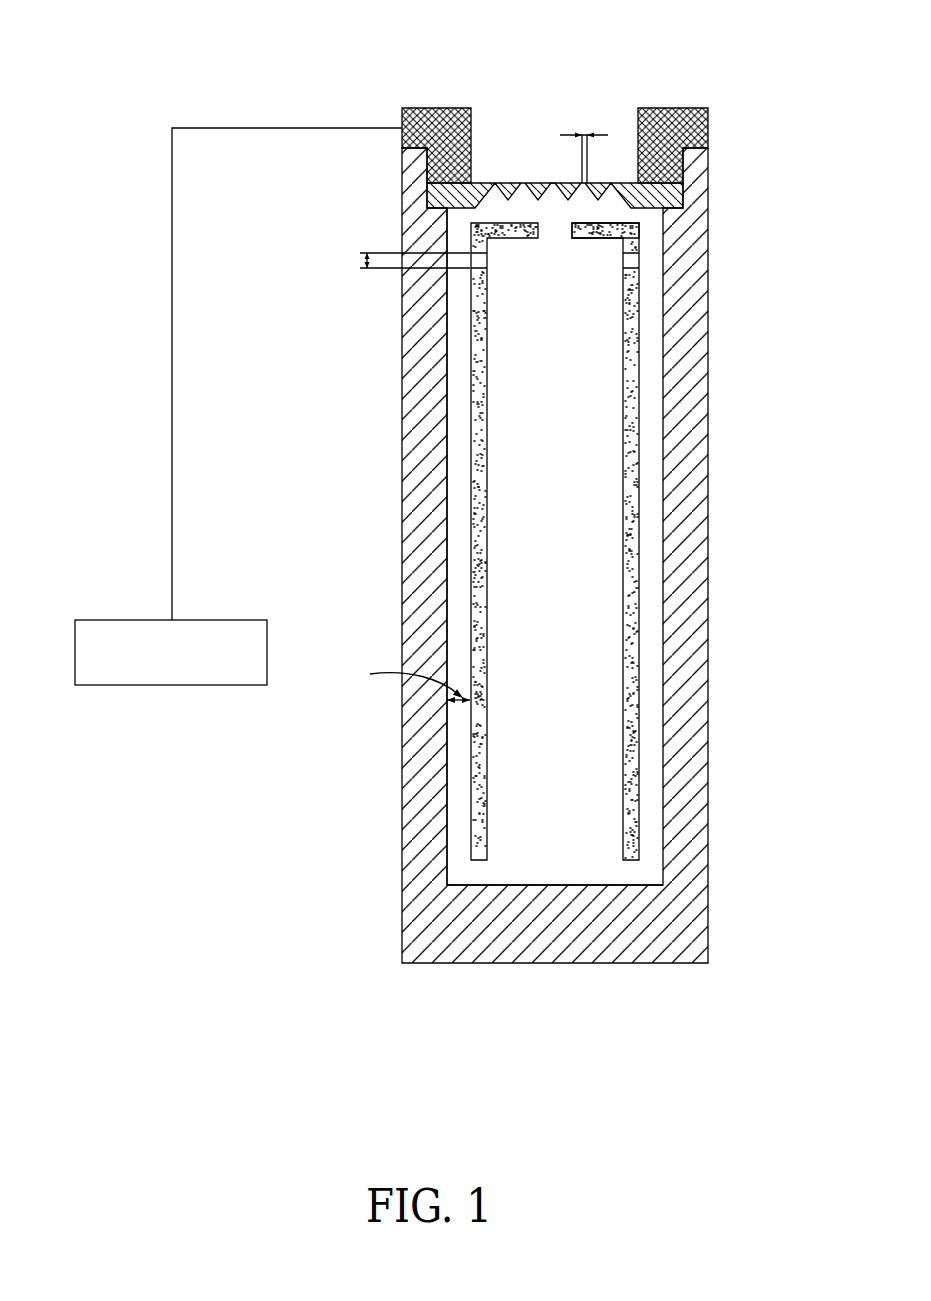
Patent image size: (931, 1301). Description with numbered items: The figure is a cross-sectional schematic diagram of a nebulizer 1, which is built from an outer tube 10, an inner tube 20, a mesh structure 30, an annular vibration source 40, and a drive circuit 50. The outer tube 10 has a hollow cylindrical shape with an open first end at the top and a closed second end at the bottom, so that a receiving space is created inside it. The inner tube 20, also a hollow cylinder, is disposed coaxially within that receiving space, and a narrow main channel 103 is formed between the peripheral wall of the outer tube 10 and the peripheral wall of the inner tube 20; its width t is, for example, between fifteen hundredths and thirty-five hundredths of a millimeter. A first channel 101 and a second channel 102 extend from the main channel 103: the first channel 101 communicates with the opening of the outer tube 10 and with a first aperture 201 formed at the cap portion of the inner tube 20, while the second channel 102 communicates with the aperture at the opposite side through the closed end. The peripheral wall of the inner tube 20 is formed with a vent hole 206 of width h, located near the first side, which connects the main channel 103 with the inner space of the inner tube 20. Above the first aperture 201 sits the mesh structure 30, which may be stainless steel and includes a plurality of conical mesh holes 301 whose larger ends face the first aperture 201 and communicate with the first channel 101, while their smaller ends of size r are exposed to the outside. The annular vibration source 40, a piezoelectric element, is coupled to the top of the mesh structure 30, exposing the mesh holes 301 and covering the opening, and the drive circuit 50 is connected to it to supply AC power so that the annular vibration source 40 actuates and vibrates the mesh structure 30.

The nebulizer 1 is at (733, 67).
The outer tube 10 is at (697, 357).
The first channel 101 is at (507, 214).
The second channel 102 is at (503, 872).
The main channel 103 is at (455, 456).
The inner tube 20 is at (477, 352).
The first aperture 201 is at (573, 232).
The vent hole 206 is at (632, 262).
The mesh structure 30 is at (678, 195).
The mesh hole 301 is at (555, 182).
The annular vibration source 40 is at (436, 108).
The drive circuit 50 is at (134, 620).